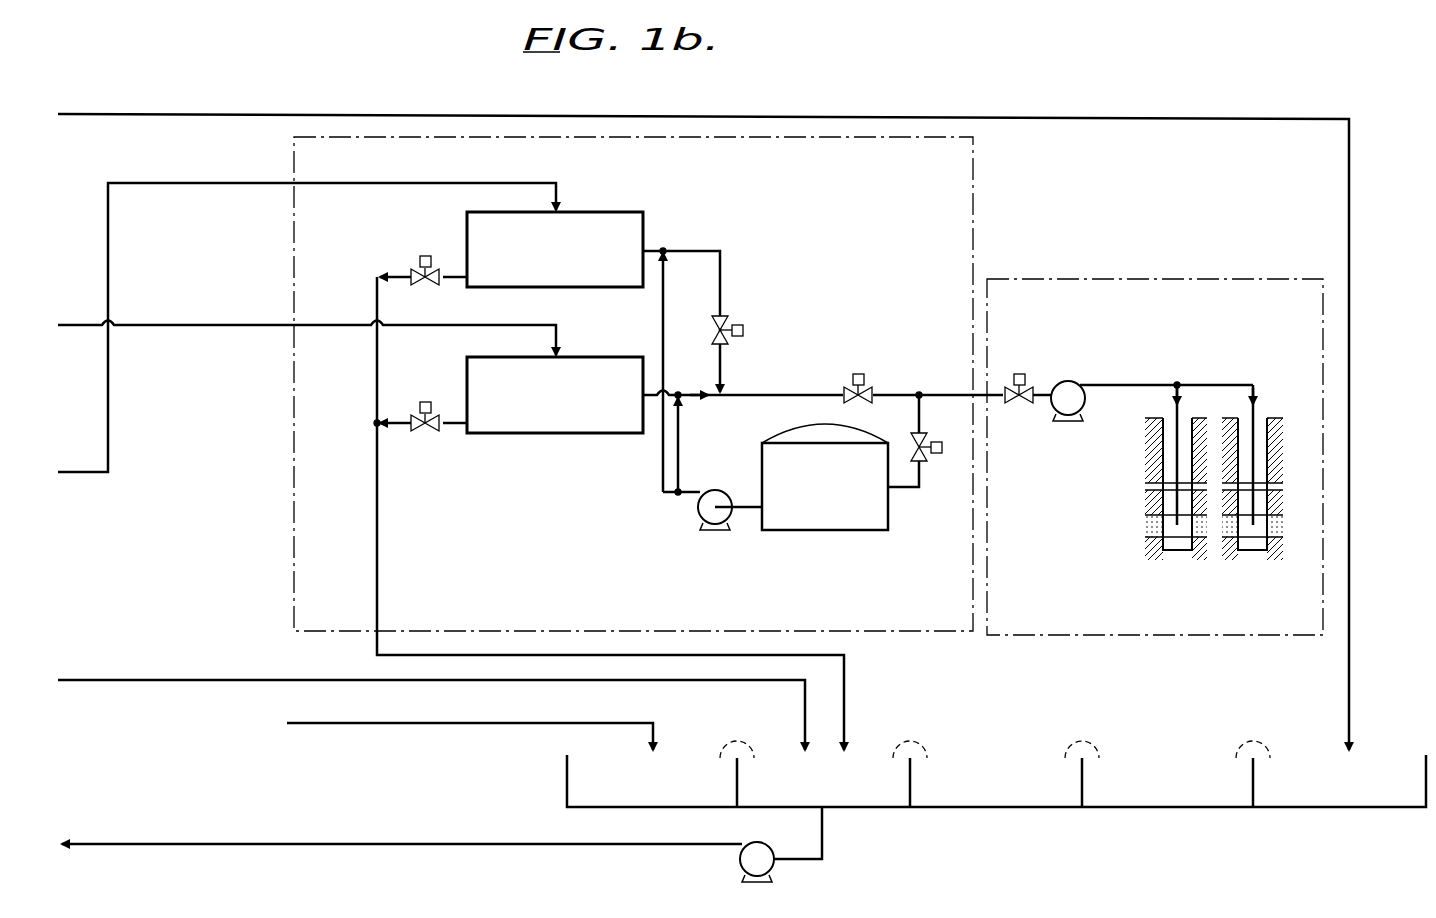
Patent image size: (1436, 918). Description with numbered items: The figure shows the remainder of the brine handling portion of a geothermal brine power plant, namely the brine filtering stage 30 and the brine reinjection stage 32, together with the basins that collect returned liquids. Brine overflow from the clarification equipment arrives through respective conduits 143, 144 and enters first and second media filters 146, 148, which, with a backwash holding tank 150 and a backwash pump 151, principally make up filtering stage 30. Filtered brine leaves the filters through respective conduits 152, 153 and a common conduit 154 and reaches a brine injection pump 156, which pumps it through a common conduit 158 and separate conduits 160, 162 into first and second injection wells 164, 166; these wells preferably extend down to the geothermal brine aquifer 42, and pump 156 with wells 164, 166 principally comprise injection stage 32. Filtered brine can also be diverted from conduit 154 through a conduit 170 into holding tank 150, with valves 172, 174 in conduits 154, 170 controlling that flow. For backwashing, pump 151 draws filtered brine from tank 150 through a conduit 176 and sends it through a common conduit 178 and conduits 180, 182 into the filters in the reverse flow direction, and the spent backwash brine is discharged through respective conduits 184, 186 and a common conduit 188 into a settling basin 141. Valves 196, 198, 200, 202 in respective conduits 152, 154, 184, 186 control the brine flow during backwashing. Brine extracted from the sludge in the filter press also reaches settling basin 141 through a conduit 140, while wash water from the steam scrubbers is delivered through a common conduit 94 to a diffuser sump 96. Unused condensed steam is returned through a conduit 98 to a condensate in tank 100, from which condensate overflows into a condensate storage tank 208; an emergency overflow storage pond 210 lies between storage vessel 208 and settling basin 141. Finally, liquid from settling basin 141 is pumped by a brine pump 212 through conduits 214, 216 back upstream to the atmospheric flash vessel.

The brine filtering stage 30 is at (975, 192).
The brine reinjection stage 32 is at (1136, 279).
The underground aquifer 42 is at (1140, 524).
The common conduit 94 is at (545, 722).
The diffuser sump 96 is at (567, 783).
The conduit 98 is at (136, 113).
The condensate in tank 100 is at (1368, 808).
The conduit 140 is at (112, 678).
The settling basin 141 is at (778, 807).
The conduit 143 is at (101, 324).
The conduit 144 is at (102, 472).
The first media filter 146 is at (606, 212).
The second media filter 148 is at (588, 357).
The backwash holding tank 150 is at (848, 530).
The backwash pump 151 is at (700, 514).
The conduit 152 is at (720, 283).
The conduit 153 is at (688, 400).
The common conduit 154 is at (801, 394).
The brine injection pump 156 is at (1070, 381).
The common conduit 158 is at (1126, 385).
The conduit 160 is at (1181, 401).
The conduit 162 is at (1257, 388).
The first injection well 164 is at (1165, 418).
The second injection well 166 is at (1262, 418).
The conduit 170 is at (918, 415).
The valve 172 is at (1020, 374).
The valve 174 is at (928, 456).
The conduit 176 is at (750, 497).
The common conduit 178 is at (683, 500).
The conduit 180 is at (662, 311).
The conduit 182 is at (683, 449).
The conduit 184 is at (377, 299).
The conduit 186 is at (400, 424).
The common conduit 188 is at (377, 583).
The valve 196 is at (745, 330).
The valve 198 is at (857, 374).
The valve 200 is at (427, 256).
The valve 202 is at (428, 402).
The condensate storage tank 208 is at (1183, 808).
The emergency overflow storage pond 210 is at (978, 808).
The brine pump 212 is at (740, 860).
The conduit 214 is at (822, 840).
The conduit 216 is at (121, 843).